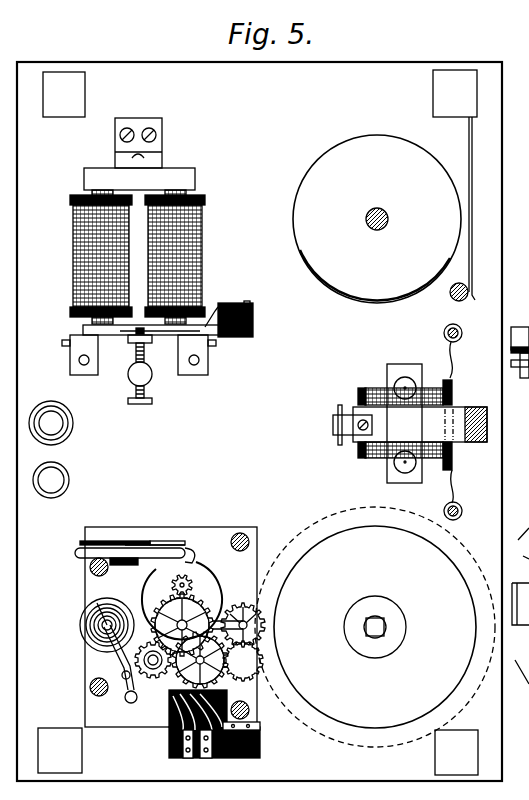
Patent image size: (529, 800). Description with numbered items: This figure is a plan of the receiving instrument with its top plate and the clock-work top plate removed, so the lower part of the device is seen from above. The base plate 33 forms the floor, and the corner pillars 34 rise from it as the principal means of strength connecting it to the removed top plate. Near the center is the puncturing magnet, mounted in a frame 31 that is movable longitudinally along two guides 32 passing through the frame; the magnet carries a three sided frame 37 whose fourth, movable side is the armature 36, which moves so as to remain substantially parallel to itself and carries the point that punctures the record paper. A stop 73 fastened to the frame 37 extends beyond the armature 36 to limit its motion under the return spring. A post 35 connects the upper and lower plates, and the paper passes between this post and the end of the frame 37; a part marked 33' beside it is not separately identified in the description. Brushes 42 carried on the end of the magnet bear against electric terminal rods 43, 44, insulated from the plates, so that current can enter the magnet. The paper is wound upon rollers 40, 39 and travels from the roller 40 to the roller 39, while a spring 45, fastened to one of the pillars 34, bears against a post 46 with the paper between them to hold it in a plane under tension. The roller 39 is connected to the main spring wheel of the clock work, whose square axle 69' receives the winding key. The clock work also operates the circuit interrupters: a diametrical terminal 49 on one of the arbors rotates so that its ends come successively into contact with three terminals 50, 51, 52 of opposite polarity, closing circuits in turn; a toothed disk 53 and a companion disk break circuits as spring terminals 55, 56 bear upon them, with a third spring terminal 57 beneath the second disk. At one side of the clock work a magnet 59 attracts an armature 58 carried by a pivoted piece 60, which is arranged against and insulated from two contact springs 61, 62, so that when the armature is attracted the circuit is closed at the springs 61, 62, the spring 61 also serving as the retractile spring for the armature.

The base plate 33 is at (259, 421).
The corner pillars 34 is at (258, 422).
The magnet 59 is at (149, 221).
The armature 58 is at (83, 329).
The contact spring 62 is at (216, 307).
The contact spring 61 is at (212, 342).
The pivoted piece 60 is at (146, 345).
The roller 40 is at (377, 219).
The spring 45 is at (473, 243).
The post 46 is at (450, 299).
The frame 31 is at (404, 423).
The guide bars 32 is at (406, 378).
The shaft 33' is at (441, 425).
The post 35 is at (488, 400).
The stop 73 is at (340, 423).
The three sided frame 37 is at (375, 429).
The armature 36 is at (338, 444).
The electric terminal rod 43 is at (463, 333).
The brushes 42 is at (466, 486).
The electric terminal rod 44 is at (463, 510).
The roller 39 is at (375, 627).
The square axle 69' is at (402, 627).
The spring terminal 57 is at (80, 540).
The spring terminal 55 is at (80, 558).
The spring terminal 56 is at (170, 546).
The toothed disk 53 is at (216, 560).
The diametrical terminal 49 is at (220, 680).
The terminal 51 is at (212, 758).
The terminal 52 is at (190, 758).
The terminal 50 is at (262, 726).